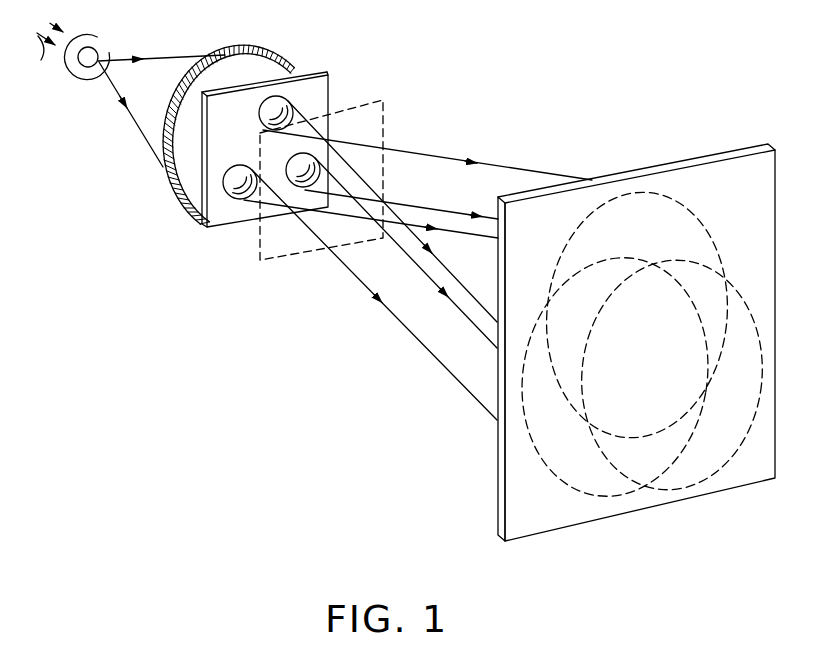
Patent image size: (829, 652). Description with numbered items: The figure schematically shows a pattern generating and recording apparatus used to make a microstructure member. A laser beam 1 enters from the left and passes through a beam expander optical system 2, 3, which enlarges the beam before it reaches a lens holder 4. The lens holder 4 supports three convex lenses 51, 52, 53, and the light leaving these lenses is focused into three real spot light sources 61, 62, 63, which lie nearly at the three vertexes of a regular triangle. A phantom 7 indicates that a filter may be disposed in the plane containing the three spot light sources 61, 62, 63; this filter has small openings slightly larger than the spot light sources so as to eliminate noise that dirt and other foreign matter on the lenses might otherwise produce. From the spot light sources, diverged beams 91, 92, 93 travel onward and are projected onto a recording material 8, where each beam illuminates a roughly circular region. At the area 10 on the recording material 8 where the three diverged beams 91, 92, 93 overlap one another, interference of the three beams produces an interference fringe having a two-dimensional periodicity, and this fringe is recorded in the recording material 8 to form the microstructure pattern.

The laser beam 1 is at (50, 50).
The beam expander optical system 2 is at (98, 38).
The beam expander optical system 3 is at (238, 50).
The lens holder 4 is at (258, 85).
The convex lens 51 is at (280, 97).
The convex lens 52 is at (226, 184).
The convex lens 53 is at (287, 170).
The spot light source 61 is at (330, 141).
The spot light source 62 is at (294, 213).
The spot light source 63 is at (356, 202).
The filter 7 is at (386, 116).
The recording material 8 is at (613, 177).
The diverged beam 91 is at (642, 190).
The diverged beam 92 is at (526, 421).
The diverged beam 93 is at (590, 441).
The overlap area 10 is at (647, 288).